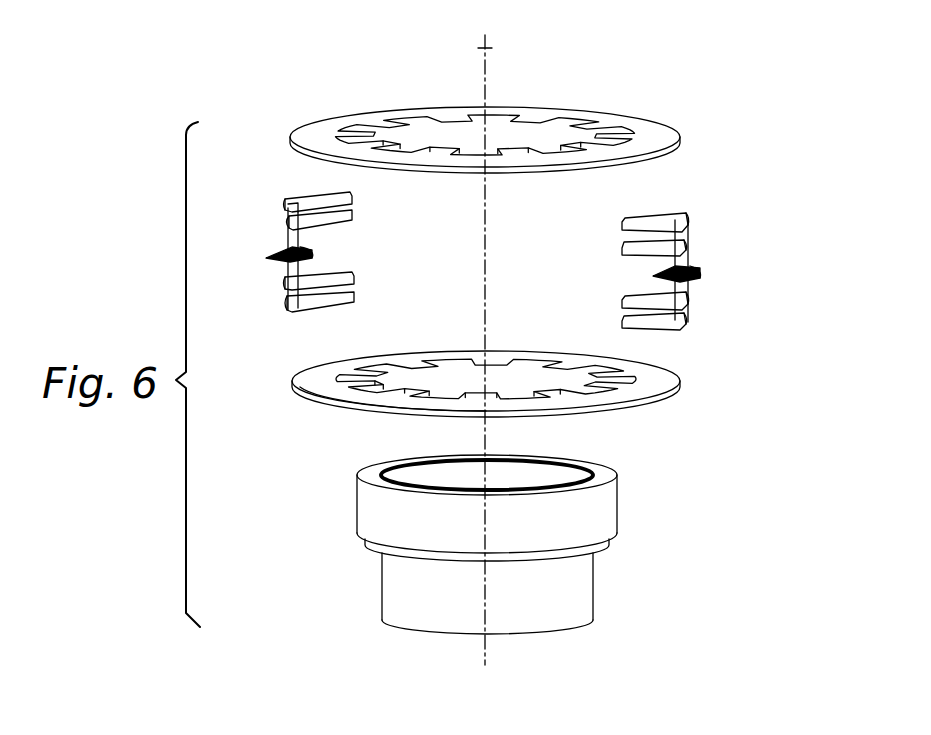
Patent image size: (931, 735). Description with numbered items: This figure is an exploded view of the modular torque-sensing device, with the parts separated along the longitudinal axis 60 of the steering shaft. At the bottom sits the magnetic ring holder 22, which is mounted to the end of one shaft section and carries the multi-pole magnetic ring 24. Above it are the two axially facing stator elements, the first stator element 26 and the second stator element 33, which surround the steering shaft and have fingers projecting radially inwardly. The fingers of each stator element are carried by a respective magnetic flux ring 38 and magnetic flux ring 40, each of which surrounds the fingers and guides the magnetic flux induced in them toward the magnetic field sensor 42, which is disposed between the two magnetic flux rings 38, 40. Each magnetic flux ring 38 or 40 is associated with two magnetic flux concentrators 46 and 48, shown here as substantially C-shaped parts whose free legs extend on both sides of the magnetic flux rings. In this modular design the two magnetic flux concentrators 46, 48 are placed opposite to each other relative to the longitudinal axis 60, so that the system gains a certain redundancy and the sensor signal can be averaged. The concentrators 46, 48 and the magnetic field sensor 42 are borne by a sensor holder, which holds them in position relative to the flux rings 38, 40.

The longitudinal axis 60 is at (485, 48).
The second stator element 33 is at (578, 116).
The magnetic flux ring 40 is at (685, 128).
The magnetic flux concentrator 48 is at (290, 196).
The magnetic field sensor 42 is at (283, 252).
The magnetic flux concentrator 46 is at (303, 310).
The magnetic flux ring 38 is at (678, 381).
The first stator element 26 is at (330, 403).
The multi-pole magnetic ring 24 is at (600, 513).
The magnetic ring holder 22 is at (590, 588).